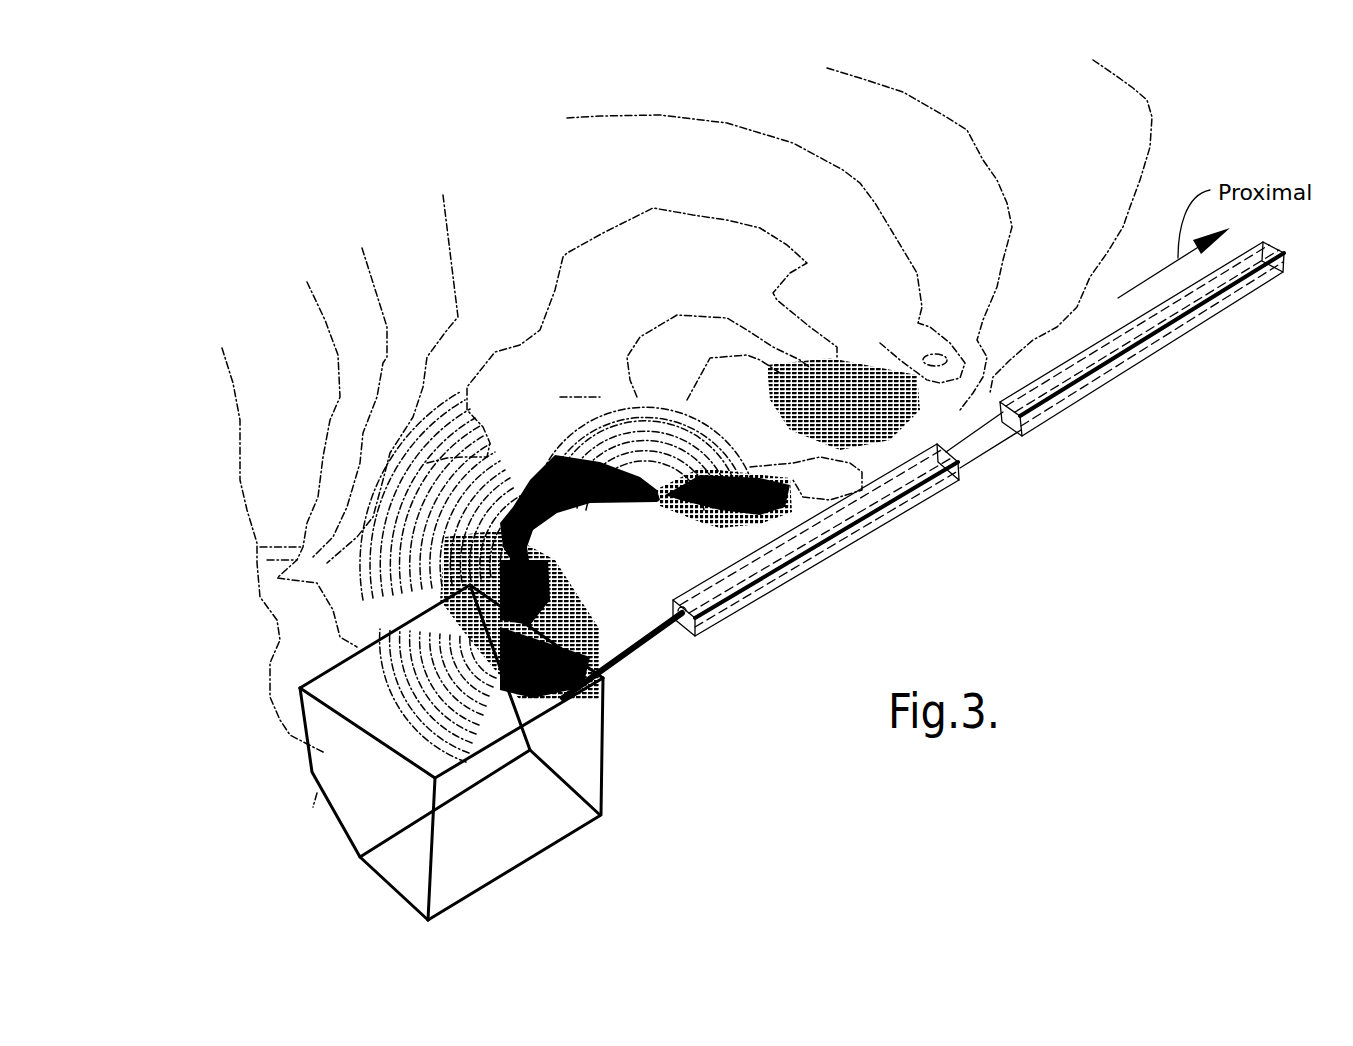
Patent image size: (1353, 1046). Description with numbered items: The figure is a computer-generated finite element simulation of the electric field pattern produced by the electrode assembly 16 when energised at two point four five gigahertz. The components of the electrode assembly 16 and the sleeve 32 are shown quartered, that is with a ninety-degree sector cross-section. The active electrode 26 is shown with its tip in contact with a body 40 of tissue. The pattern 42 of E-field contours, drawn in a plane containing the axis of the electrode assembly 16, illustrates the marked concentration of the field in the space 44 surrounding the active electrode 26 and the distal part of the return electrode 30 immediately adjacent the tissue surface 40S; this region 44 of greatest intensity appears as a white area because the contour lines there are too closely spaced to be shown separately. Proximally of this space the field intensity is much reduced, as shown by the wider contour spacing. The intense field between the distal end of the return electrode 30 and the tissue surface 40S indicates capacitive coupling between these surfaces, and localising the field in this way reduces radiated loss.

The electrode assembly 16 is at (978, 460).
The active electrode 26 is at (635, 658).
The return electrode 30 is at (816, 561).
The sleeve 32 is at (1035, 433).
The body of tissue 40 is at (515, 752).
The tissue surface 40S is at (602, 752).
The pattern of E-field contours 42 is at (560, 278).
The space of greatest E-field intensity 44 is at (757, 593).